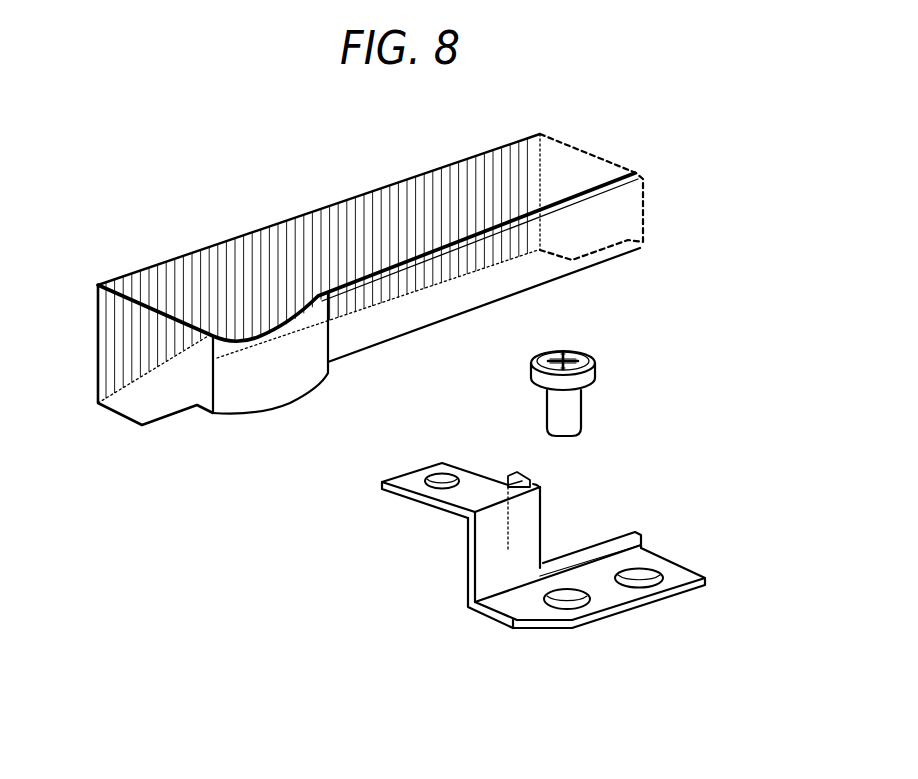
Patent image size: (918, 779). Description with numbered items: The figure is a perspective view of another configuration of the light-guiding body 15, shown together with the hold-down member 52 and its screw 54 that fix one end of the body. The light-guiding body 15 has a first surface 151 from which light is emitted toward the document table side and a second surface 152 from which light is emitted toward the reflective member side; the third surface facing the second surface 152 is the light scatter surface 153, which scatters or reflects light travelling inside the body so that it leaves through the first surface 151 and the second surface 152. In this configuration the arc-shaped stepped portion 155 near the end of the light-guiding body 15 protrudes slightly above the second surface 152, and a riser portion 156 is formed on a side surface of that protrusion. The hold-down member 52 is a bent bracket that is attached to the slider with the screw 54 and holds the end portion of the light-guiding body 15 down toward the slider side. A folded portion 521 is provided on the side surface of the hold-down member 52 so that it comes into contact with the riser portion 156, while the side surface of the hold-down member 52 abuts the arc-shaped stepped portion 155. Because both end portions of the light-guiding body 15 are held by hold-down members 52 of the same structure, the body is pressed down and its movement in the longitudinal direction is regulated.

The light-guiding body 15 is at (370, 270).
The first surface 151 is at (567, 173).
The second surface 152 is at (533, 268).
The light scatter surface 153 is at (310, 243).
The arc-shaped stepped portion 155 is at (270, 388).
The riser portion 156 is at (330, 340).
The hold-down member 52 is at (538, 519).
The folded portion 521 is at (528, 477).
The screw 54 is at (583, 403).